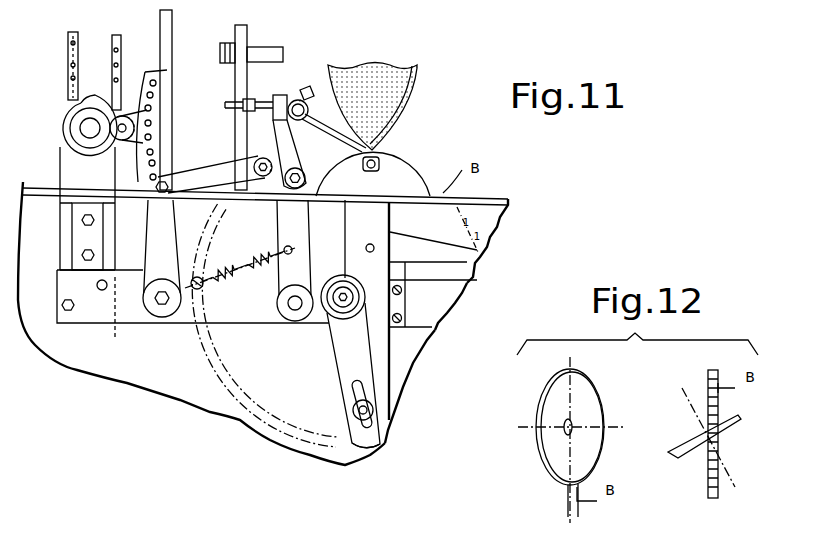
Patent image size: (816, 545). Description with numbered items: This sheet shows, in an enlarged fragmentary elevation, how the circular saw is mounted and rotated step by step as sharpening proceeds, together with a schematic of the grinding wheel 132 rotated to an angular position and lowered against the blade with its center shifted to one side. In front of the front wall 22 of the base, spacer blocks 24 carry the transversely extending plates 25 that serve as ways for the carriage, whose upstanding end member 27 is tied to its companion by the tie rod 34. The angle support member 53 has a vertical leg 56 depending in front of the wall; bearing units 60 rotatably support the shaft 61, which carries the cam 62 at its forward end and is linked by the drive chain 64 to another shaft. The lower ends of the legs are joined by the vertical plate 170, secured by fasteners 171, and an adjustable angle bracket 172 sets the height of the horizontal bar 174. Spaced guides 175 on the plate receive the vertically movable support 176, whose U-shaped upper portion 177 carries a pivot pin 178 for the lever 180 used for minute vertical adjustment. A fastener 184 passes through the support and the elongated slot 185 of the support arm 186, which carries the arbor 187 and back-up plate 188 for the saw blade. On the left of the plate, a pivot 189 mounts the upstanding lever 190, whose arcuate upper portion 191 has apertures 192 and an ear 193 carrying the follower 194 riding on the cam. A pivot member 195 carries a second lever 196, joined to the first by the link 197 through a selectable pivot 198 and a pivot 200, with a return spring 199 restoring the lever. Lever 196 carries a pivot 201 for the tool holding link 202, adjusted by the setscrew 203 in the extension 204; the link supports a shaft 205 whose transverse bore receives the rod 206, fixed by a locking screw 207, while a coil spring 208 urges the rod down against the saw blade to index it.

In FIG. 11, the front wall 22 is at (182, 400).
In FIG. 11, the spacer blocks 24 is at (167, 170).
In FIG. 11, the transversely extending plates 25 is at (172, 140).
In FIG. 11, the end member 27 is at (172, 28).
In FIG. 11, the tie rod 34 is at (262, 47).
In FIG. 11, the angle support member 53 is at (59, 202).
In FIG. 11, the vertical leg 56 is at (65, 220).
In FIG. 11, the bearing units 60 is at (62, 133).
In FIG. 11, the shaft 61 is at (87, 123).
In FIG. 11, the cam 62 is at (77, 103).
In FIG. 11, the drive chain 64 is at (75, 33).
In FIG. 11, the grinding wheel 132 is at (410, 105).
In FIG. 12, the grinding wheel 132 is at (592, 400).
In FIG. 11, the bar or plate 170 is at (433, 308).
In FIG. 11, the fasteners 171 is at (104, 292).
In FIG. 11, the angle bracket 172 is at (80, 237).
In FIG. 11, the horizontally disposed bar 174 is at (498, 195).
In FIG. 11, the guides 175 is at (405, 278).
In FIG. 11, the support 176 is at (388, 360).
In FIG. 11, the U-shaped upper portion 177 is at (393, 229).
In FIG. 11, the pivot pin 178 is at (369, 244).
In FIG. 11, the lever 180 is at (453, 253).
In FIG. 11, the fastener 184 is at (353, 410).
In FIG. 11, the elongated slot 185 is at (372, 449).
In FIG. 11, the support arm 186 is at (368, 377).
In FIG. 11, the arbor 187 is at (342, 302).
In FIG. 11, the back-up plate 188 is at (358, 285).
In FIG. 11, the pivot 189 is at (433, 195).
In FIG. 11, the lever 190 is at (376, 169).
In FIG. 11, the arcuate upper portion 191 is at (145, 72).
In FIG. 11, the apertures 192 is at (157, 93).
In FIG. 11, the ear 193 is at (83, 138).
In FIG. 11, the follower 194 is at (117, 140).
In FIG. 11, the pivot member 195 is at (290, 303).
In FIG. 11, the lever 196 is at (290, 228).
In FIG. 11, the link 197 is at (230, 168).
In FIG. 11, the pivot 198 is at (158, 240).
In FIG. 11, the return spring 199 is at (203, 290).
In FIG. 11, the pivot 200 is at (258, 160).
In FIG. 11, the pivot 201 is at (290, 182).
In FIG. 11, the tool holding link 202 is at (302, 150).
In FIG. 11, the setscrew 203 is at (252, 100).
In FIG. 11, the extension 204 is at (285, 98).
In FIG. 11, the shaft 205 is at (305, 110).
In FIG. 11, the rod 206 is at (333, 131).
In FIG. 11, the locking screw 207 is at (307, 102).
In FIG. 11, the coil spring 208 is at (300, 91).